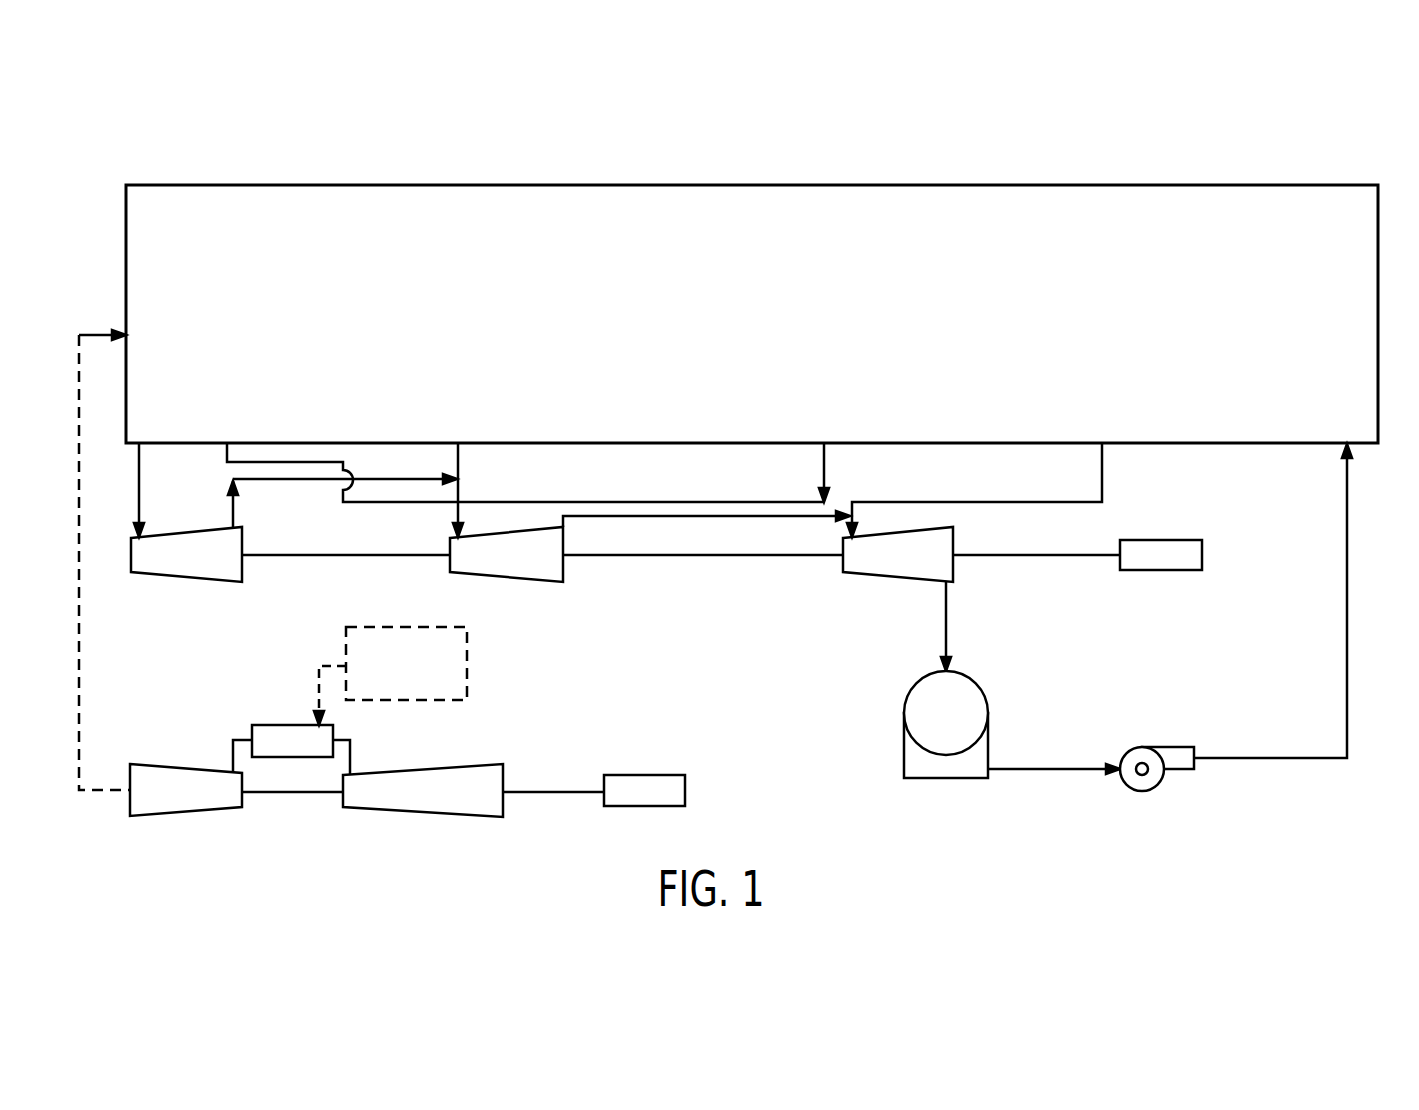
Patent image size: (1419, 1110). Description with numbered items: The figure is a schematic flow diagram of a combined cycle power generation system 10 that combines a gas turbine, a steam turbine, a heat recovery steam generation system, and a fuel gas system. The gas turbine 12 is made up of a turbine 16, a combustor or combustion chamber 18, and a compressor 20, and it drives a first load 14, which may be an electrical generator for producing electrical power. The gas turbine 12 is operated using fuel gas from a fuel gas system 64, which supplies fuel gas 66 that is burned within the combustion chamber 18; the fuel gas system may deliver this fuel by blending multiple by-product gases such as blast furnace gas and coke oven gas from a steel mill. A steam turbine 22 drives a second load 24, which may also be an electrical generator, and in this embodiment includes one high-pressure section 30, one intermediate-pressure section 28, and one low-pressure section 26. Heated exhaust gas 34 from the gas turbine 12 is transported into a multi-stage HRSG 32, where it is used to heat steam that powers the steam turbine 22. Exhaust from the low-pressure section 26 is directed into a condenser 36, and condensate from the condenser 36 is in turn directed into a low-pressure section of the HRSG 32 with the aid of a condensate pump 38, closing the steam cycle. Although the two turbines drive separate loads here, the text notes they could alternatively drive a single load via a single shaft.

The combined cycle power generation system 10 is at (1330, 158).
The gas turbine 12 is at (198, 860).
The first load 14 is at (645, 775).
The turbine 16 is at (183, 767).
The combustor or combustion chamber 18 is at (293, 725).
The compressor 20 is at (423, 768).
The steam turbine 22 is at (592, 576).
The second load 24 is at (1163, 540).
The low-pressure section 26 is at (902, 580).
The intermediate-pressure section 28 is at (508, 578).
The high-pressure section 30 is at (187, 573).
The multi-stage HRSG 32 is at (752, 185).
The heated exhaust gas 34 is at (80, 625).
The condenser 36 is at (904, 745).
The condensate pump 38 is at (1157, 787).
The fuel gas system 64 is at (408, 626).
The fuel gas 66 is at (329, 665).